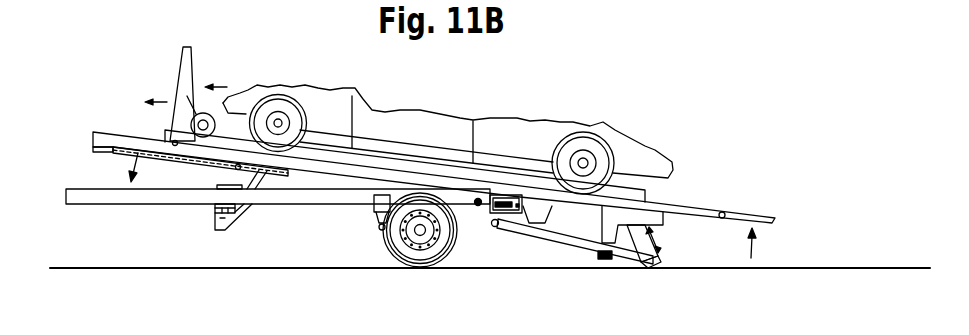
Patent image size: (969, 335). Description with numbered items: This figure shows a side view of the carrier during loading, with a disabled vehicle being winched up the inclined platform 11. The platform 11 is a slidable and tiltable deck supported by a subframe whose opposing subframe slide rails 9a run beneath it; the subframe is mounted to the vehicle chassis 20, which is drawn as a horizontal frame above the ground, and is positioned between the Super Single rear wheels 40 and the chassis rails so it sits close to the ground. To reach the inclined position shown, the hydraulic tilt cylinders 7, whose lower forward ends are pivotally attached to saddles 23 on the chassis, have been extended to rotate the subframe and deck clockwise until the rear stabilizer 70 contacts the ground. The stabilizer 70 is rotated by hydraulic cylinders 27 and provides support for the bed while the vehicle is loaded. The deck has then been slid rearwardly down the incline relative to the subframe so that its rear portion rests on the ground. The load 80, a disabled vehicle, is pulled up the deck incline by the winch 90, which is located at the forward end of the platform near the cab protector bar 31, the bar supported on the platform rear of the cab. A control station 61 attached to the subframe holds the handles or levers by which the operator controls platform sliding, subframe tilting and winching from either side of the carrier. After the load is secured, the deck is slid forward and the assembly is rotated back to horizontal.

The tilt cylinders 7 is at (270, 176).
The subframe slide rails 9a is at (355, 168).
The platform 11 is at (675, 198).
The vehicle chassis 20 is at (119, 196).
The saddles 23 is at (228, 231).
The hydraulic cylinders 27 is at (643, 243).
The cab protector bar 31 is at (184, 62).
The rear wheels 40 is at (454, 256).
The control stations 61 is at (512, 216).
The rear stabilizer 70 is at (654, 272).
The load 80 is at (524, 130).
The winch 90 is at (193, 110).